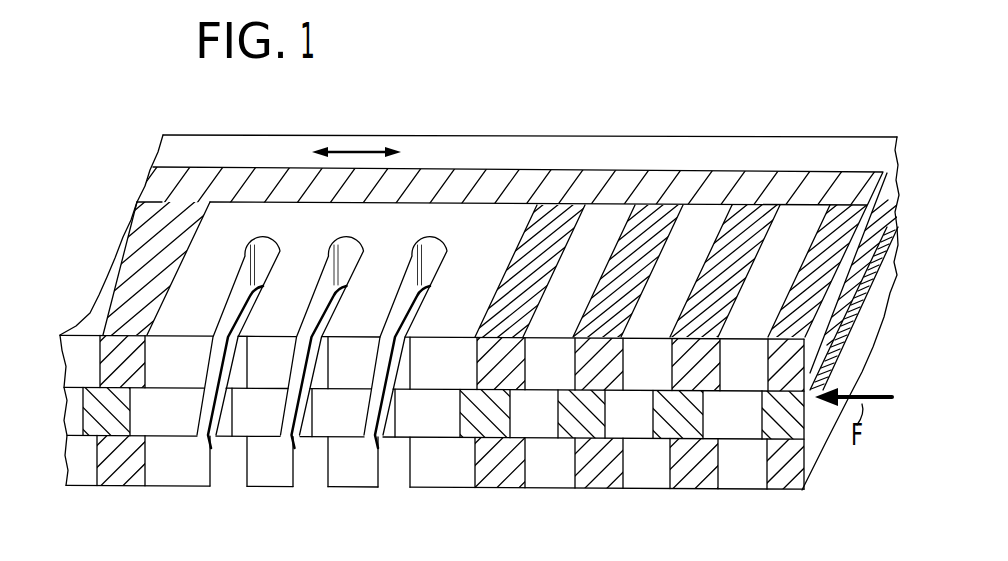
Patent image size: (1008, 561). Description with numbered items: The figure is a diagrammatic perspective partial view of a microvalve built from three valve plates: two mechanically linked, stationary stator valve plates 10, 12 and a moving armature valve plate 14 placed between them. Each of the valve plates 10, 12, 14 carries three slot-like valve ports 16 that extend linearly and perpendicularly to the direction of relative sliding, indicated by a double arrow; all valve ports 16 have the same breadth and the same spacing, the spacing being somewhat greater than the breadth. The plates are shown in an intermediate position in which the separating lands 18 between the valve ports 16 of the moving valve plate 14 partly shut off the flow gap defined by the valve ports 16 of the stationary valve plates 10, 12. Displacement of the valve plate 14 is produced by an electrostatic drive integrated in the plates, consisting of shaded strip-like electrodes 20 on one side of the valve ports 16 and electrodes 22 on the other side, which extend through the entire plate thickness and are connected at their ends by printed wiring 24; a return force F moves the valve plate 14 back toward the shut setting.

The stationary valve plate 10 is at (645, 478).
The stationary valve plate 12 is at (83, 312).
The moving valve plate 14 is at (735, 425).
The valve ports 16 is at (243, 276).
The separating lands 18 is at (320, 427).
The electrodes 20 is at (642, 232).
The electrodes 22 is at (148, 243).
The printed wiring 24 is at (485, 174).